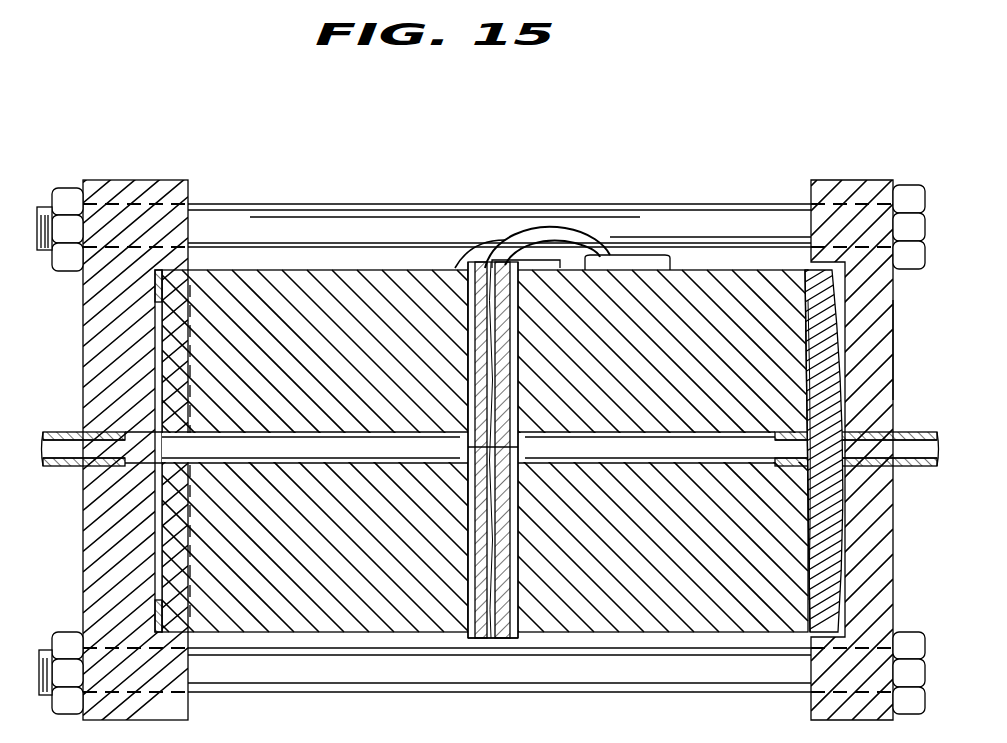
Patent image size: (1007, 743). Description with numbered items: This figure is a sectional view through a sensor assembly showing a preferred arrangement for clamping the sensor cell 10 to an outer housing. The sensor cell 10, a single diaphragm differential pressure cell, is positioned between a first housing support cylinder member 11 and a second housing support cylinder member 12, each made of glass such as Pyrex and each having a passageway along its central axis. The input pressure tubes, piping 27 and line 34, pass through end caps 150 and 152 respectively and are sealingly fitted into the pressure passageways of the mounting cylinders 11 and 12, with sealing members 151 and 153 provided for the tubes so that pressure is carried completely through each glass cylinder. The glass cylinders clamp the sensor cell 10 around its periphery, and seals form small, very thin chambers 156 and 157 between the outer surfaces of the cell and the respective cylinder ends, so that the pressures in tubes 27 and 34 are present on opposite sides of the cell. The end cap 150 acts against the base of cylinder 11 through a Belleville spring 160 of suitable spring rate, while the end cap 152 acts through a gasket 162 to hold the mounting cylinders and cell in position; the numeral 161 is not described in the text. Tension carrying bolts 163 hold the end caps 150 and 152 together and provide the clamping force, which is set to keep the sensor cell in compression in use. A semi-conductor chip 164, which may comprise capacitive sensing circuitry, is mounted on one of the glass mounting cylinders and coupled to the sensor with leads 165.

The sensor cell 10 is at (508, 645).
The first housing support cylinder member 11 is at (760, 278).
The second housing support cylinder member 12 is at (290, 282).
The piping 27 is at (918, 430).
The line 34 is at (60, 436).
The end cap 150 is at (860, 185).
The sealing member 151 is at (898, 378).
The end cap 152 is at (132, 180).
The sealing member 153 is at (200, 442).
The chamber 156 is at (518, 447).
The chamber 157 is at (465, 400).
The Belleville spring 160 is at (825, 566).
The spacer edge 161 is at (805, 477).
The gasket 162 is at (195, 282).
The tension carrying bolts 163 is at (688, 217).
The semi-conductor chip 164 is at (632, 256).
The leads 165 is at (540, 228).